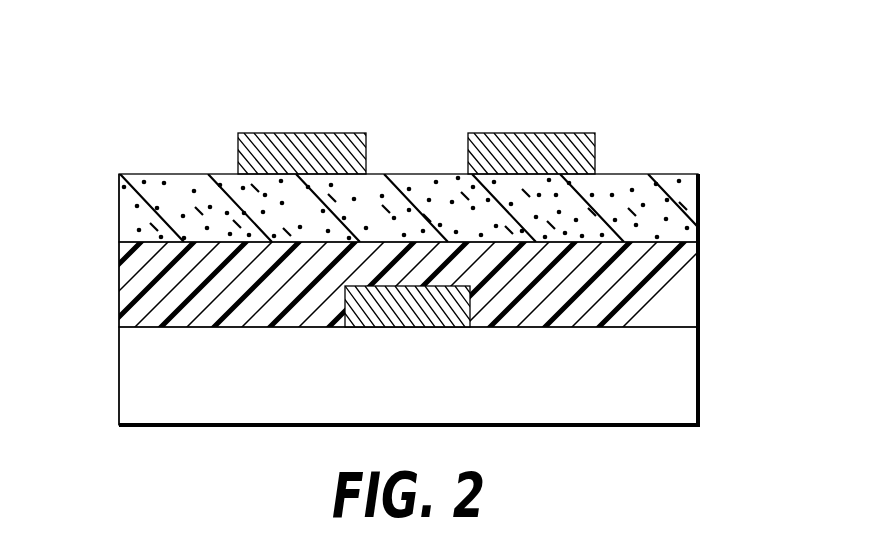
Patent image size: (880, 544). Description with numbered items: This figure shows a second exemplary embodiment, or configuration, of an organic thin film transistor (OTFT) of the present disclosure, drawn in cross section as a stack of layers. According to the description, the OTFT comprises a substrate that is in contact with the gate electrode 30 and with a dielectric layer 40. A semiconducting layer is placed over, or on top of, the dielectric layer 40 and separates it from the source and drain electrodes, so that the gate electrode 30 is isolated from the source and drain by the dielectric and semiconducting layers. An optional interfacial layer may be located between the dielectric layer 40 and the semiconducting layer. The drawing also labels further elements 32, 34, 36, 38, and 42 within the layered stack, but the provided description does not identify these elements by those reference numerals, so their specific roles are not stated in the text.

The gate electrode 30 is at (146, 82).
The dielectric layer 32 is at (697, 208).
The semiconductor layer 34 is at (110, 242).
The substrate 36 is at (688, 375).
The gate electrode 38 is at (423, 318).
The dielectric layer 40 is at (300, 133).
The drain electrode 42 is at (530, 133).